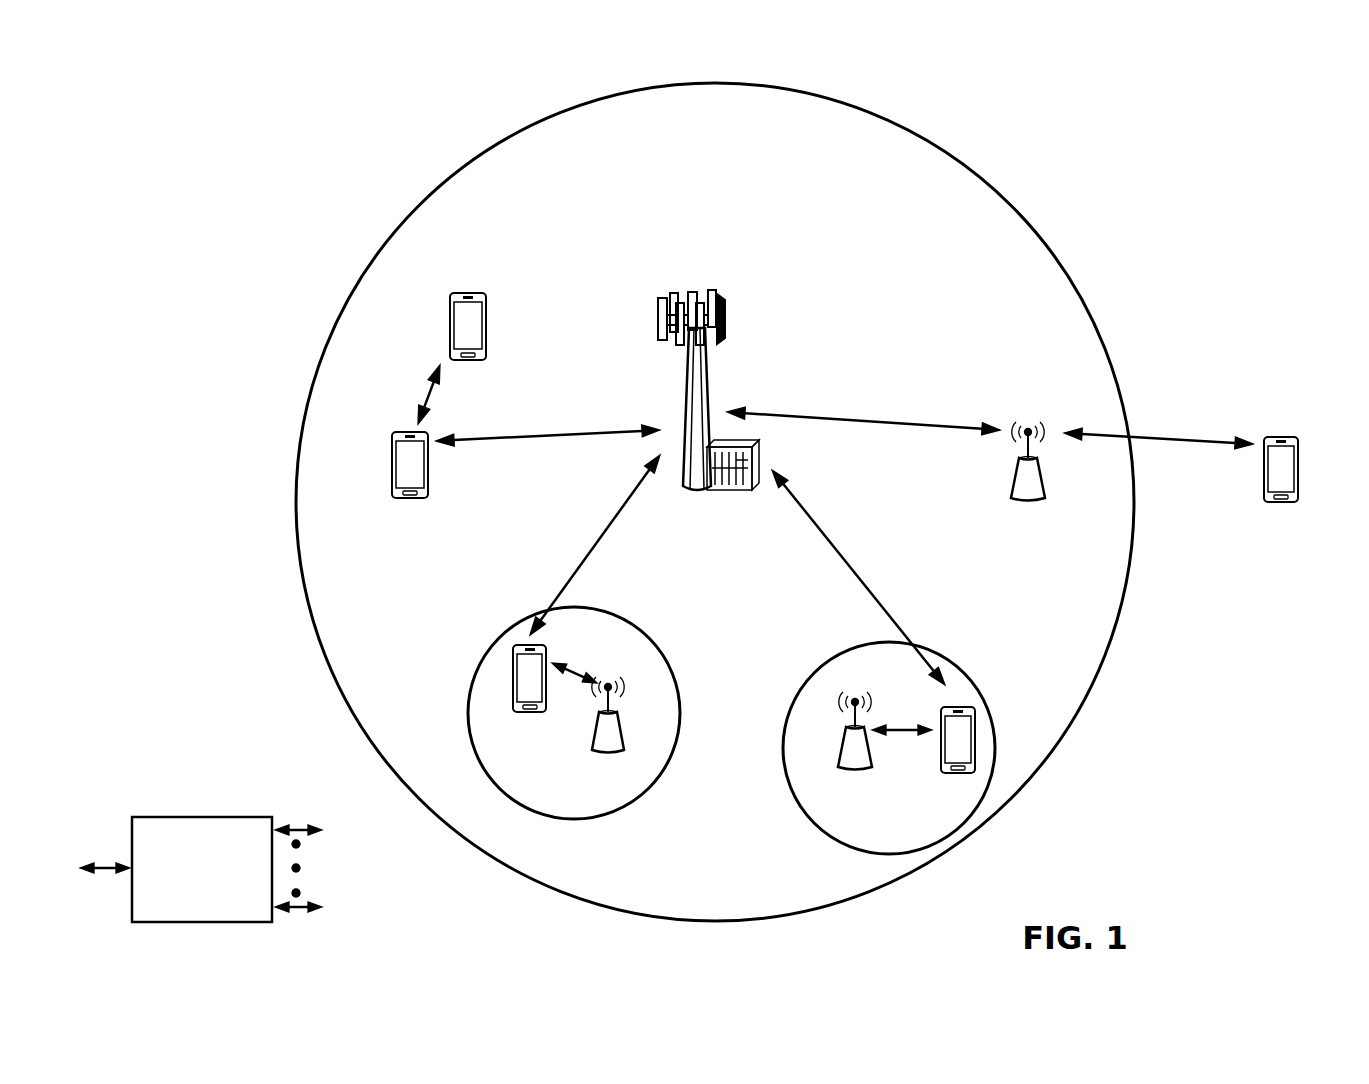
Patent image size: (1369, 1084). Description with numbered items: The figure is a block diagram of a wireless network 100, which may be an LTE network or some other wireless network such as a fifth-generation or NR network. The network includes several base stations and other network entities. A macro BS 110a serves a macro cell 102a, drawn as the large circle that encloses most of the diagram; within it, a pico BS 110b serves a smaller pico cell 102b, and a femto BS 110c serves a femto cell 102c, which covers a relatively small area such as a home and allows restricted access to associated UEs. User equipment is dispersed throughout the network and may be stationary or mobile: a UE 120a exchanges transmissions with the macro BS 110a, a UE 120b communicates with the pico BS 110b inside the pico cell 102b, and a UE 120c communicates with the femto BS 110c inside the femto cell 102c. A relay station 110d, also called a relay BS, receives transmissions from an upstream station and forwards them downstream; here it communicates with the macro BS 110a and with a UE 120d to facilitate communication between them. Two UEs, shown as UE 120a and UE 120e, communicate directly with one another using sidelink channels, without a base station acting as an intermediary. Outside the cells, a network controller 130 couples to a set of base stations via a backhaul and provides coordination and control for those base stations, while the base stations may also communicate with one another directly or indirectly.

The wireless network 100 is at (178, 77).
The macro cell 102a is at (989, 190).
The pico cell 102b is at (670, 650).
The femto cell 102c is at (818, 652).
The macro BS 110a is at (703, 283).
The pico BS 110b is at (630, 736).
The femto BS 110c is at (844, 753).
The relay station 110d is at (1030, 426).
The UE 120a is at (390, 455).
The UE 120b is at (518, 713).
The UE 120c is at (947, 774).
The UE 120d is at (1298, 434).
The UE 120e is at (452, 315).
The network controller 130 is at (199, 814).